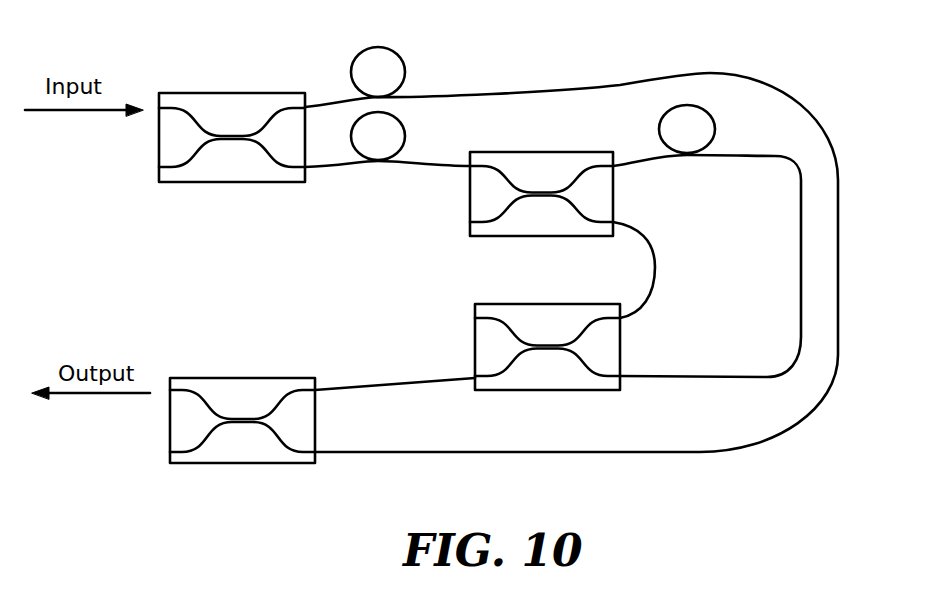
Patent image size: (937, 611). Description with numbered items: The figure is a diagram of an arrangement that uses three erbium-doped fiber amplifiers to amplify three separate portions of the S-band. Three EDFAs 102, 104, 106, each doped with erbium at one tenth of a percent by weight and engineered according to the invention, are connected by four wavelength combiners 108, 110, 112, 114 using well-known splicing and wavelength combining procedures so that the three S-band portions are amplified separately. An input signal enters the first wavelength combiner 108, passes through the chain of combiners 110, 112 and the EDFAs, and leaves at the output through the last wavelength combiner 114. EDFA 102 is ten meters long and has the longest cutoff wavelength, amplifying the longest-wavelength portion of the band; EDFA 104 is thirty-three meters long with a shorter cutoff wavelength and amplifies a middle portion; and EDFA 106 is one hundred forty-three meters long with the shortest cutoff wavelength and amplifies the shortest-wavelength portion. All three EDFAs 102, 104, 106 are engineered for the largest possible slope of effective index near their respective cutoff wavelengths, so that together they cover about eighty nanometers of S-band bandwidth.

The EDFA 102 is at (410, 132).
The EDFA 104 is at (667, 110).
The EDFA 106 is at (360, 47).
The wavelength combiner 108 is at (200, 182).
The wavelength combiner 110 is at (470, 210).
The wavelength combiner 112 is at (475, 350).
The wavelength combiner 114 is at (217, 378).